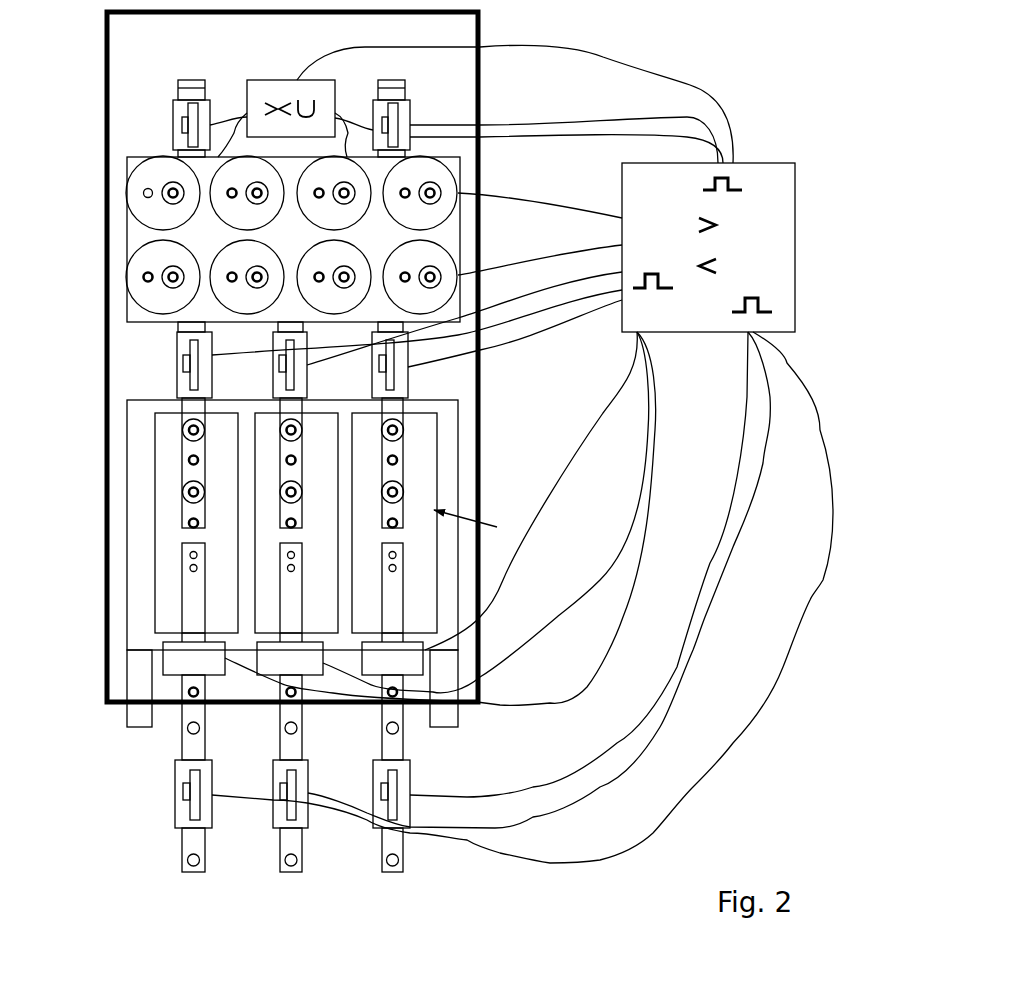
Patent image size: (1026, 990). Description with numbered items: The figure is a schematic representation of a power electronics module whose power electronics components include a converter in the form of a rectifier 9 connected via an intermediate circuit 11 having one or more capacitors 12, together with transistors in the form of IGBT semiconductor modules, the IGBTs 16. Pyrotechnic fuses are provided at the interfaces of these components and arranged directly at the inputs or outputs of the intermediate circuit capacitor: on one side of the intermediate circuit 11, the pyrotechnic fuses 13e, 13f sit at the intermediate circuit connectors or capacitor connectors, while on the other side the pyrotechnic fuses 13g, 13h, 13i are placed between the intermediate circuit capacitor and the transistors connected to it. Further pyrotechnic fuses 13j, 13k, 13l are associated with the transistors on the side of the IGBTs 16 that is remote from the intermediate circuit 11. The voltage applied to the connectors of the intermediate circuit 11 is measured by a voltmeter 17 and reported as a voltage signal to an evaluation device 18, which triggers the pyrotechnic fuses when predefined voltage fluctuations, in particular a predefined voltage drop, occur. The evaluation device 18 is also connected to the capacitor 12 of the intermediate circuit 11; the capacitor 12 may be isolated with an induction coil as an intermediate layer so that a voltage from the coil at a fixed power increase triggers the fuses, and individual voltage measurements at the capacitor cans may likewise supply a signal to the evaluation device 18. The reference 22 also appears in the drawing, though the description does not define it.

The rectifier 9 is at (481, 427).
The intermediate circuit 11 is at (98, 263).
The capacitor 12 is at (142, 194).
The pyrotechnic fuse 13e is at (145, 122).
The pyrotechnic fuse 13f is at (420, 103).
The pyrotechnic fuse 13g is at (172, 356).
The pyrotechnic fuse 13h is at (269, 368).
The pyrotechnic fuse 13i is at (367, 382).
The pyrotechnic fuse 13j is at (165, 803).
The pyrotechnic fuse 13k is at (273, 798).
The pyrotechnic fuse 13l is at (368, 803).
The IGBT 16 is at (165, 507).
The voltmeter 17 is at (294, 73).
The evaluation device 18 is at (801, 236).
The battery module 22 is at (292, 460).